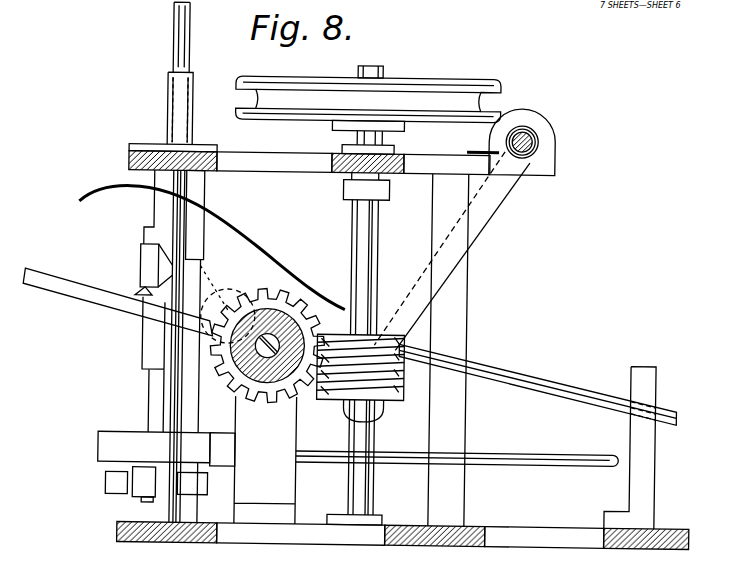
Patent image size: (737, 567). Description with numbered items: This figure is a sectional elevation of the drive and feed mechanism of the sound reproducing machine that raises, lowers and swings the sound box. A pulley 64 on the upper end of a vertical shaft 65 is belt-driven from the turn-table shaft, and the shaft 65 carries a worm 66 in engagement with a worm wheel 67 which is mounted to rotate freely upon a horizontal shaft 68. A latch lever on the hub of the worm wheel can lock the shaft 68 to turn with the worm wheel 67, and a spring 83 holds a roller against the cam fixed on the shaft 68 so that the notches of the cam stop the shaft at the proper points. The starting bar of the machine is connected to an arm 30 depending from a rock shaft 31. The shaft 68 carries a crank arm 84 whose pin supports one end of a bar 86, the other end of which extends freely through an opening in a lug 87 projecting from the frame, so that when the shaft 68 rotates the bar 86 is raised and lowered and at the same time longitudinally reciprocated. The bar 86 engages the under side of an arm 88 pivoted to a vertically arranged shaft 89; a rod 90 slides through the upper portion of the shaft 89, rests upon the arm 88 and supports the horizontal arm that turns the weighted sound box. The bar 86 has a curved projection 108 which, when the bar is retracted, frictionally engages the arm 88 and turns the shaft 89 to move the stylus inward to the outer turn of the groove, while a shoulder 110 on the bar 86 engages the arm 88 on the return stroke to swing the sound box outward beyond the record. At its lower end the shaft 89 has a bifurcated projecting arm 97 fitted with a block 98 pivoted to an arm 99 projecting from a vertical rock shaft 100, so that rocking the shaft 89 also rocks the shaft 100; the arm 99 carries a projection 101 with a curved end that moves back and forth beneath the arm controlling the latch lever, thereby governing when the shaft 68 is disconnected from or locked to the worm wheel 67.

The arm 30 is at (490, 206).
The rock shaft 31 is at (533, 141).
The pulley 64 is at (448, 92).
The vertical shaft 65 is at (374, 68).
The worm 66 is at (386, 333).
The worm wheel 67 is at (300, 296).
The horizontal shaft 68 is at (267, 362).
The spring 83 is at (530, 127).
The crank arm 84 is at (226, 300).
The bar 86 is at (73, 294).
The lug 87 is at (645, 458).
The arm 88 is at (148, 268).
The vertical shaft 89 is at (150, 352).
The rod 90 is at (178, 44).
The bifurcated projecting arm 97 is at (118, 487).
The block 98 is at (145, 491).
The arm 99 is at (112, 444).
The vertical rock shaft 100 is at (172, 392).
The projection 101 is at (493, 456).
The curved projection 108 is at (240, 237).
The shoulder 110 is at (138, 298).